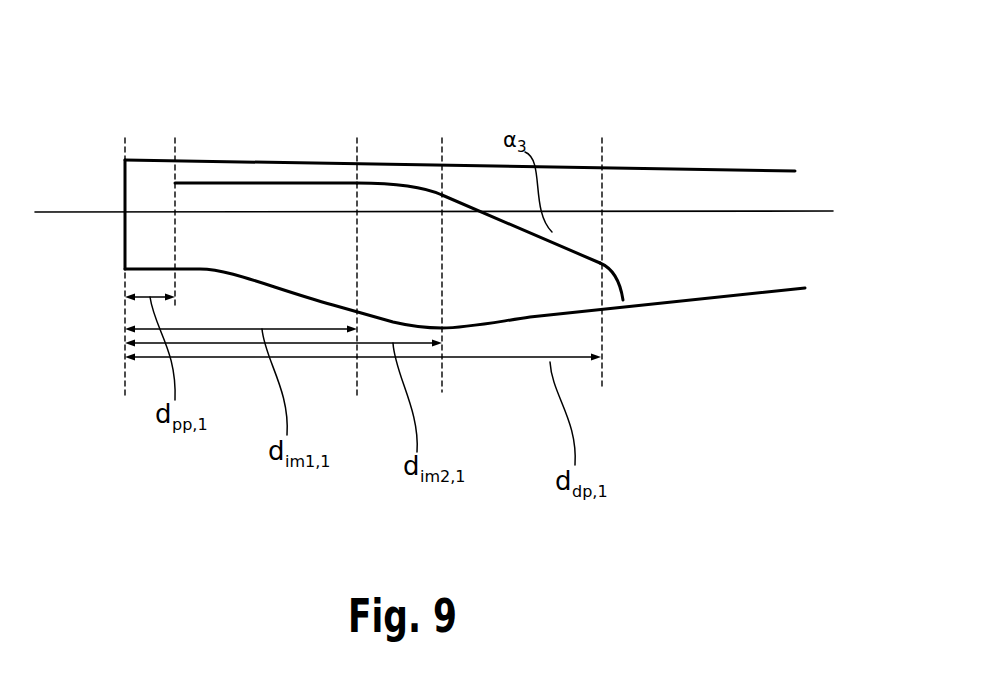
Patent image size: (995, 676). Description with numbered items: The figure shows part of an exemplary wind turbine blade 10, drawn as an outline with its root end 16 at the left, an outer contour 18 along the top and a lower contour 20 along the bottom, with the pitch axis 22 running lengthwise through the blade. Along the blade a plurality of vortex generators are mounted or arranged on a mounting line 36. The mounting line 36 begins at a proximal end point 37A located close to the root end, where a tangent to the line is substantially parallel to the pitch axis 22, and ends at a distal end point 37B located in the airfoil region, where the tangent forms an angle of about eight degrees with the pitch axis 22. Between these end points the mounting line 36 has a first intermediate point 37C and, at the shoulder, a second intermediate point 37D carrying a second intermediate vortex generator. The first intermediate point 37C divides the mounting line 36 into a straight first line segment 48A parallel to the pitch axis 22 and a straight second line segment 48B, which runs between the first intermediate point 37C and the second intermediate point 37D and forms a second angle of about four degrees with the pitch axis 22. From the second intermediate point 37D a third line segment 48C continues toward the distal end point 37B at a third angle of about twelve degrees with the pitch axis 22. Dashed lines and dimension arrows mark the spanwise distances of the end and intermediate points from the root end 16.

The aircraft engine nozzle / nacelle assembly 10 is at (136, 117).
The inlet face of the nozzle 16 is at (123, 173).
The outer wall 18 is at (751, 170).
The lower / inner wall of the duct 20 is at (733, 300).
The pitch axis 22 is at (826, 210).
The mounting line 36 is at (429, 229).
The proximal end point 37A is at (175, 183).
The distal end point 37B is at (623, 300).
The first intermediate point 37C is at (360, 183).
The second intermediate point 37D is at (440, 195).
The first line segment 48A is at (227, 183).
The second line segment 48B is at (407, 193).
The third line segment 48C is at (521, 227).